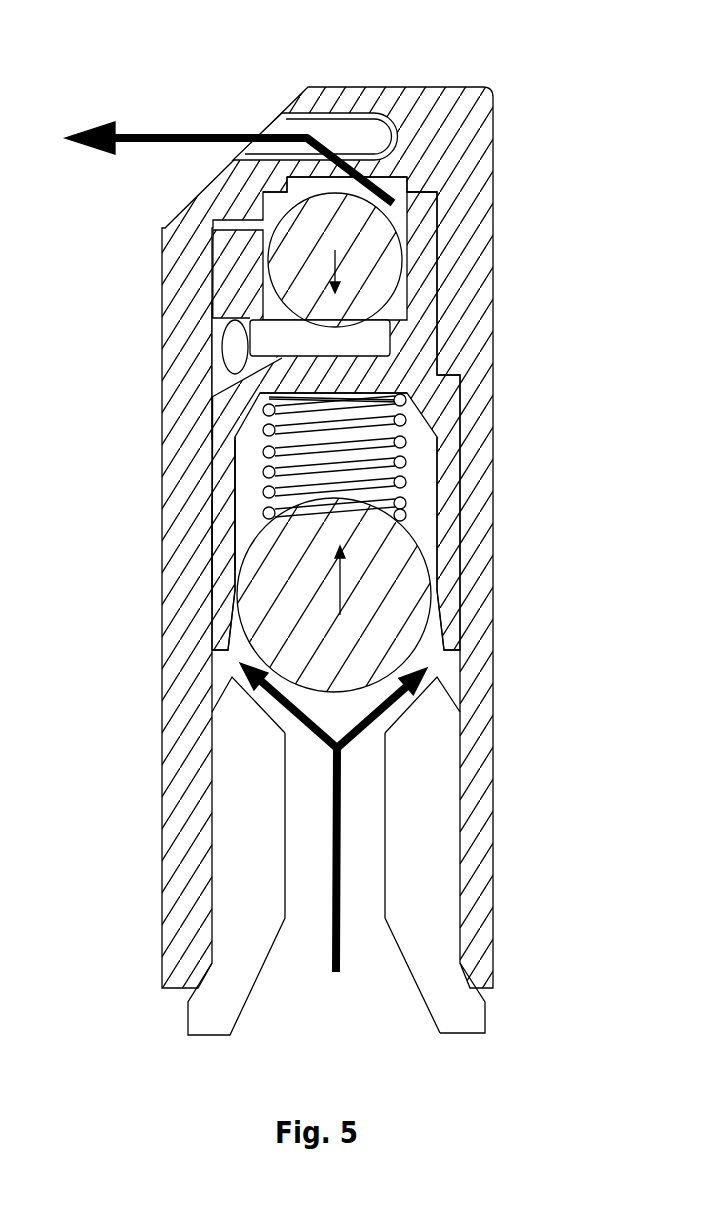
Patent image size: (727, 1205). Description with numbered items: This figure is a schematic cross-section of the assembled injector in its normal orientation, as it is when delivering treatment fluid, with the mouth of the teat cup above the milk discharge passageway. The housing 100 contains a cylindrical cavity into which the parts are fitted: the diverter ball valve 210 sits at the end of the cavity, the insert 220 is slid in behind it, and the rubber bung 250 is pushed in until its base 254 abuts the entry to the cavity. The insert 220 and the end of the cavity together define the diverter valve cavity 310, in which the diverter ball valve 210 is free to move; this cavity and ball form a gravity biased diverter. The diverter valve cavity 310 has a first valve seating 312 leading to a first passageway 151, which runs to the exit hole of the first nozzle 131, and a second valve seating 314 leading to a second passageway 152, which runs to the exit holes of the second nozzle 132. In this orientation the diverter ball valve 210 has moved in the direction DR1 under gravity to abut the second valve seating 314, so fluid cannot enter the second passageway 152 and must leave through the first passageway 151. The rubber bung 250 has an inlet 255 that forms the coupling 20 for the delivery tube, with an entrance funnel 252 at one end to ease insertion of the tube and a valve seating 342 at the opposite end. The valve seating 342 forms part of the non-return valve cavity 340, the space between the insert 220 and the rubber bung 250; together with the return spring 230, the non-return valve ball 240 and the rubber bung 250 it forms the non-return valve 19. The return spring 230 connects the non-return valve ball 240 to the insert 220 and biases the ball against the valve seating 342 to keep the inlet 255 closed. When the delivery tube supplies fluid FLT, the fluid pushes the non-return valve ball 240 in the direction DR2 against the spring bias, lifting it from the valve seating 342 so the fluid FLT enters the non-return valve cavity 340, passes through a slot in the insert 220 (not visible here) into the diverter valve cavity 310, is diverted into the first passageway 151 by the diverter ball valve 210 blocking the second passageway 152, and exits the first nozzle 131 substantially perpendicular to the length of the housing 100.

The housing 100 is at (483, 303).
The first nozzle 131 is at (270, 132).
The second nozzle 132 is at (177, 397).
The first passageway 151 is at (372, 172).
The second passageway 152 is at (340, 342).
The non-return valve 19 is at (242, 543).
The coupling 20 is at (220, 915).
The diverter ball valve 210 is at (363, 243).
The insert 220 is at (440, 405).
The return spring 230 is at (405, 500).
The non-return valve ball 240 is at (403, 600).
The rubber bung 250 is at (427, 845).
The entrance funnel 252 is at (403, 948).
The base 254 is at (470, 1012).
The inlet 255 is at (350, 1020).
The diverter valve cavity 310 is at (278, 207).
The first valve seating 312 is at (300, 180).
The second valve seating 314 is at (265, 296).
The non-return valve cavity 340 is at (247, 507).
The valve seating 342 is at (417, 700).
The direction DR1 is at (370, 255).
The direction DR2 is at (343, 585).
The fluid FLT is at (182, 133).